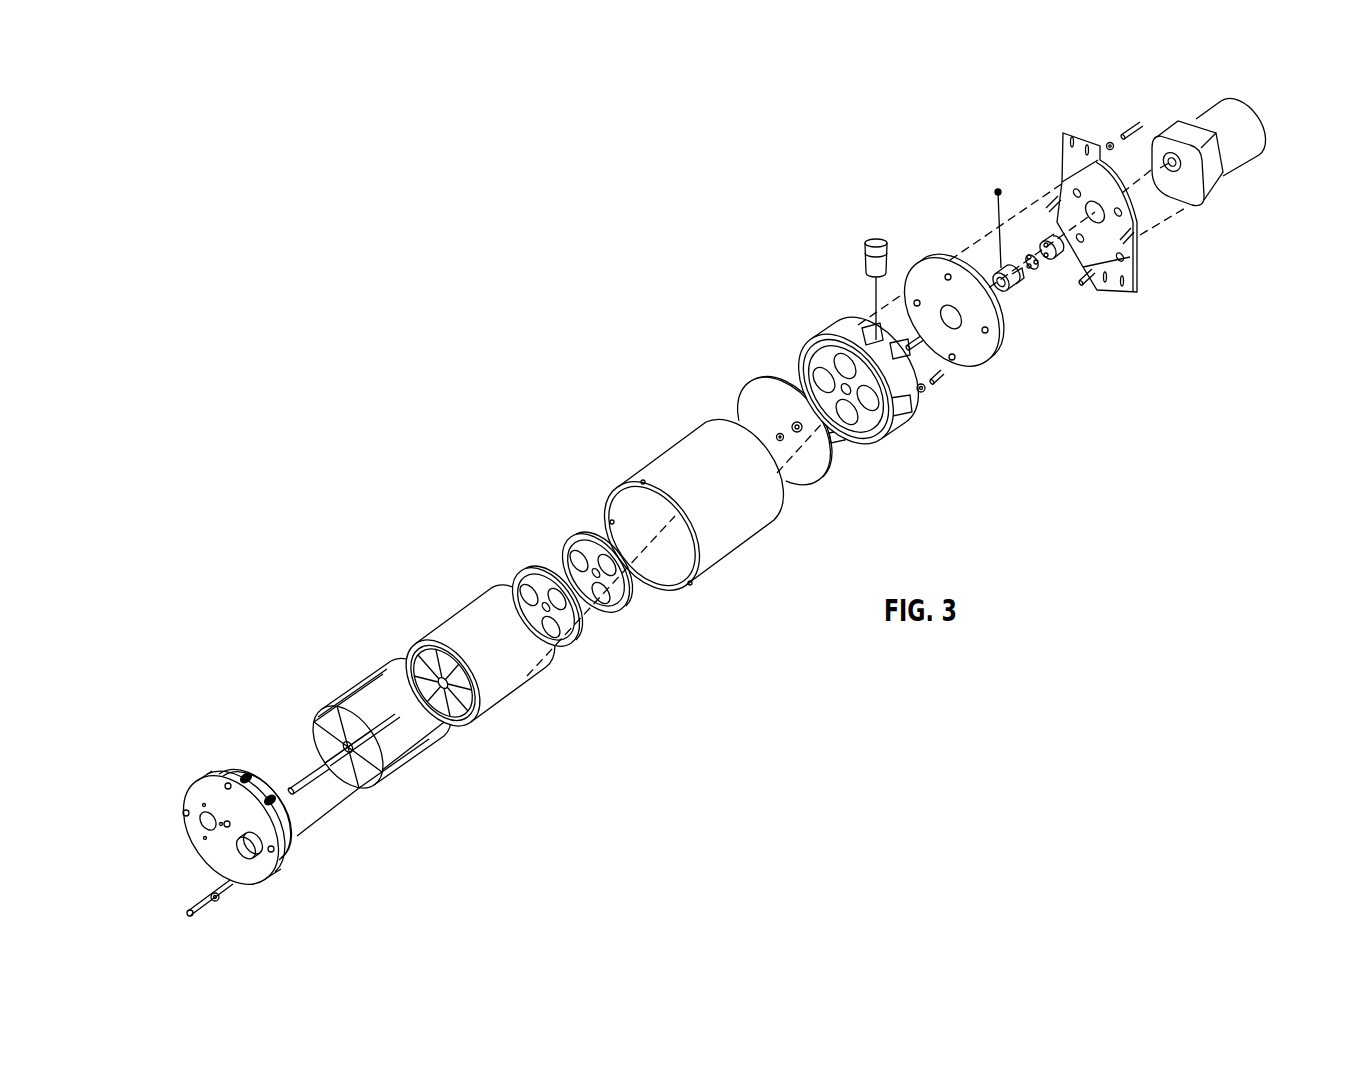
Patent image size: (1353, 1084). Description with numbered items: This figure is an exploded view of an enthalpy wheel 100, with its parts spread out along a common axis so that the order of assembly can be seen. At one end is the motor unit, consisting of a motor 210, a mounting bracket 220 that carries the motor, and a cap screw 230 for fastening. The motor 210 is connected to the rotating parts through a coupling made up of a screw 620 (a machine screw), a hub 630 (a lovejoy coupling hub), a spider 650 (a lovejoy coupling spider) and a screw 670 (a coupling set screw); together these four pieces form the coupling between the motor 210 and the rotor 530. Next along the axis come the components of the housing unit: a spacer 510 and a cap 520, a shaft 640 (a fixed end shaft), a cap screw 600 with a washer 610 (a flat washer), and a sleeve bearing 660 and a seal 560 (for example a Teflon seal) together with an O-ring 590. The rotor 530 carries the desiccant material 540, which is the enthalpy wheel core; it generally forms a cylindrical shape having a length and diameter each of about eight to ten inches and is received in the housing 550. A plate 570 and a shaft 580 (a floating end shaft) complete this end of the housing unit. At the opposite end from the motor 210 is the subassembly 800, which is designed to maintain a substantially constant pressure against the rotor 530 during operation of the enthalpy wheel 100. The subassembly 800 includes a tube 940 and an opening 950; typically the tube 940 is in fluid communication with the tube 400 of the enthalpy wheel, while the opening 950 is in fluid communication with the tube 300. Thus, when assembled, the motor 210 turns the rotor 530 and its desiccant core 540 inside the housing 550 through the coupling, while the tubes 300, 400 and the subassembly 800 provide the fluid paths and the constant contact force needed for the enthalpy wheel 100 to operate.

The enthalpy wheel 100 is at (645, 383).
The motor 210 is at (1207, 190).
The mounting bracket 220 is at (1138, 268).
The cap screw 230 is at (1130, 124).
The tube 300 is at (875, 235).
The tube 400 is at (837, 443).
The spacer 510 is at (992, 355).
The cap 520 is at (828, 327).
The rotor 530 is at (508, 696).
The desiccant material 540 is at (360, 683).
The housing 550 is at (733, 553).
The seal 560 is at (793, 423).
The plate 570 is at (515, 565).
The shaft 580 is at (302, 767).
The O-ring 590 is at (820, 480).
The cap screw 600 is at (944, 378).
The washer 610 is at (925, 391).
The screw 620 is at (1088, 281).
The hub 630 is at (1004, 291).
The shaft 640 is at (893, 300).
The spider 650 is at (1036, 268).
The sleeve bearing 660 is at (777, 434).
The screw 670 is at (997, 189).
The subassembly 800 is at (210, 773).
The tube 940 is at (254, 851).
The opening 950 is at (203, 815).